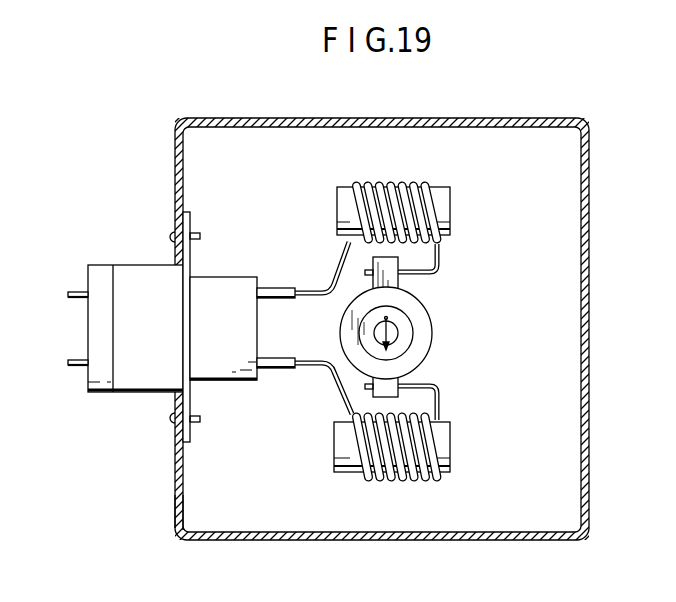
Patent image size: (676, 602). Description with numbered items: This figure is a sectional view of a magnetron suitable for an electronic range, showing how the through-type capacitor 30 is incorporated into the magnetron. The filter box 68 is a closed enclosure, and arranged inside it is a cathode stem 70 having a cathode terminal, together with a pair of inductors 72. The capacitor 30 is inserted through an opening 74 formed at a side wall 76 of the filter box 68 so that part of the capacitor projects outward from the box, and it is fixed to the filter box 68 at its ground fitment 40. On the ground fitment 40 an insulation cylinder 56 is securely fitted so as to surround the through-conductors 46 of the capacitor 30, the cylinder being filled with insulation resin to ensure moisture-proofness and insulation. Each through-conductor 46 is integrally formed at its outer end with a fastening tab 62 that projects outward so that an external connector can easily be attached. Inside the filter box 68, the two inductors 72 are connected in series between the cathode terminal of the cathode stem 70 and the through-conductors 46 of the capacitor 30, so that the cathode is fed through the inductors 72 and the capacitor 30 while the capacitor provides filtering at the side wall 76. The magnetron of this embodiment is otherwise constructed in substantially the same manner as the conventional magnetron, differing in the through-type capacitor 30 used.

The through-type capacitor 30 is at (103, 402).
The ground fitment 40 is at (192, 357).
The through-conductors 46 is at (276, 288).
The insulation cylinder 56 is at (220, 285).
The fastening tab 62 is at (77, 290).
The filter box 68 is at (588, 248).
The cathode stem 70 is at (432, 330).
The inductors 72 is at (442, 203).
The opening 74 is at (176, 388).
The side wall 76 is at (178, 515).